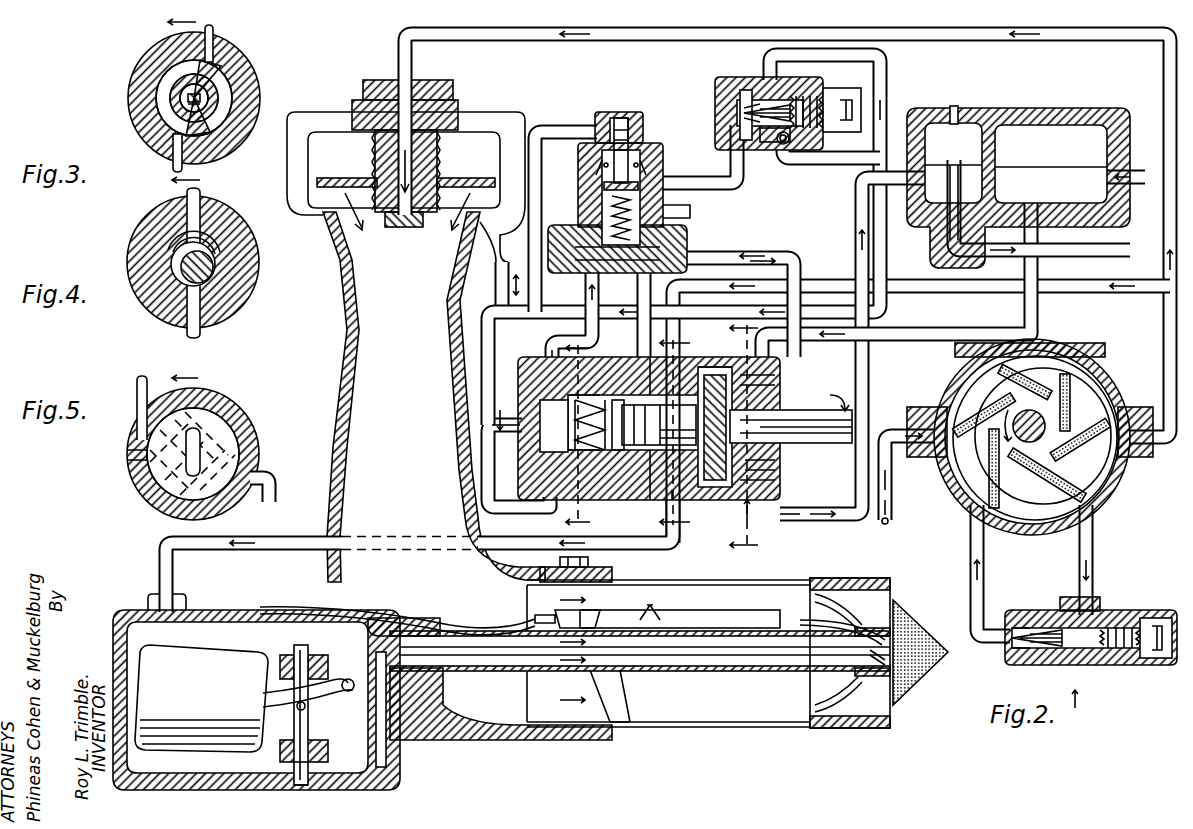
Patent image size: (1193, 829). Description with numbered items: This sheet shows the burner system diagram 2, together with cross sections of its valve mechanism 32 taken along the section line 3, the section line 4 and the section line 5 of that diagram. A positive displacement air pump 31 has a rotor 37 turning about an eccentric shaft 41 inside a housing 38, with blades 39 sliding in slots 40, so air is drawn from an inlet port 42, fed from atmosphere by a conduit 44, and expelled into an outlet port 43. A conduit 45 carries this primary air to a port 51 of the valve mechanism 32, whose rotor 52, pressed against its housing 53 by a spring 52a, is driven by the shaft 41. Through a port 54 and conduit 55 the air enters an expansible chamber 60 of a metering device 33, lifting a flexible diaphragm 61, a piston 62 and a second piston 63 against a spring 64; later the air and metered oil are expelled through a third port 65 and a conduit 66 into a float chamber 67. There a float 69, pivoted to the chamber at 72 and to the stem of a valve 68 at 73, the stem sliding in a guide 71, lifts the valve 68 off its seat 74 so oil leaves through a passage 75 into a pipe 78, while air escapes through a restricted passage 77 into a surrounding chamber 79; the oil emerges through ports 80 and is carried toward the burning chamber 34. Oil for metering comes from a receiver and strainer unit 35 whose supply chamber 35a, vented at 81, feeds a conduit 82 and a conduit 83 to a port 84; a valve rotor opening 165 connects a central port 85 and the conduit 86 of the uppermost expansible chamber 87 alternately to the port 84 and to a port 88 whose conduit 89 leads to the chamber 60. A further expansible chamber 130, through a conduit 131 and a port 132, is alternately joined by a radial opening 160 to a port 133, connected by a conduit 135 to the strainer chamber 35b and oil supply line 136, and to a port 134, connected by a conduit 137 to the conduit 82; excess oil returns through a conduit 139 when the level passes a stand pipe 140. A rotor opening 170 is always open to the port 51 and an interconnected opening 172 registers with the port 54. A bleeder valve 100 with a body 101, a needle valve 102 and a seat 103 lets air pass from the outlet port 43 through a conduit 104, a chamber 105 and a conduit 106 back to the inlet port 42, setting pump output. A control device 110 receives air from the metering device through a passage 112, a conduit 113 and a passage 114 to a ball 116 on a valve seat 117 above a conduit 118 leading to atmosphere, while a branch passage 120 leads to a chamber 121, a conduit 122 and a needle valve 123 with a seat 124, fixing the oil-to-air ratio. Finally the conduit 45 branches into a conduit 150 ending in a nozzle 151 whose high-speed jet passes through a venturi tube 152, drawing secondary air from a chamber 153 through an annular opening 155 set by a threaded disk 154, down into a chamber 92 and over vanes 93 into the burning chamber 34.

In FIG. 2, the Fig. 2 diagram 2 is at (741, 517).
In FIG. 2, the section line 3— 3 is at (737, 431).
In FIG. 2, the section line 4— 4 is at (684, 427).
In FIG. 2, the section line 5— 5 is at (587, 430).
In FIG. 2, the air pump 31 is at (1118, 525).
In FIG. 2, the valve mechanism 32 is at (731, 513).
In FIG. 2, the metering device 33 is at (568, 158).
In FIG. 2, the burning chamber 34 is at (938, 655).
In FIG. 2, the receiver and strainer unit 35 is at (1027, 116).
In FIG. 2, the receiver 35a is at (953, 157).
In FIG. 2, the oil strainer chamber 35b is at (1051, 154).
In FIG. 2, the rotor 37 is at (1085, 462).
In FIG. 2, the housing 38 is at (1018, 535).
In FIG. 2, the blades 39 is at (1060, 530).
In FIG. 2, the slots 40 is at (942, 506).
In FIG. 2, the shaft 41 is at (796, 415).
In FIG. 2, the inlet port 42 is at (945, 478).
In FIG. 2, the outlet port 43 is at (1100, 390).
In FIG. 2, the conduit 44 is at (1042, 418).
In FIG. 2, the conduit 45 is at (1077, 296).
In FIG. 4, the port 51 is at (178, 249).
In FIG. 2, the port 51 is at (697, 376).
In FIG. 2, the valve rotor 52 is at (620, 501).
In FIG. 2, the spring 52a is at (540, 456).
In FIG. 2, the valve housing 53 is at (655, 501).
In FIG. 2, the port 54 is at (613, 350).
In FIG. 2, the conduit 55 is at (639, 297).
In FIG. 2, the expansible chamber 60 is at (686, 268).
In FIG. 2, the flexible diaphragm 61 is at (702, 250).
In FIG. 2, the piston 62 is at (600, 240).
In FIG. 2, the second piston 63 is at (604, 190).
In FIG. 2, the spring 64 is at (604, 175).
In FIG. 4, the third port 65 is at (205, 316).
In FIG. 2, the third port 65 is at (680, 502).
In FIG. 2, the conduit 66 is at (679, 540).
In FIG. 2, the float chamber 67 is at (130, 611).
In FIG. 2, the valve 68 is at (294, 758).
In FIG. 2, the float 69 is at (214, 689).
In FIG. 2, the guide 71 is at (292, 660).
In FIG. 2, the pivotal connection 72 is at (348, 692).
In FIG. 2, the pivotal connection 73 is at (297, 709).
In FIG. 2, the valve seat 74 is at (306, 772).
In FIG. 2, the passage 75 is at (362, 775).
In FIG. 2, the passage 77 is at (370, 640).
In FIG. 2, the conduit 78 is at (628, 660).
In FIG. 2, the chamber 79 is at (598, 673).
In FIG. 2, the ports 80 is at (868, 634).
In FIG. 2, the vent 81 is at (957, 120).
In FIG. 2, the conduit 82 is at (862, 207).
In FIG. 5, the conduit 83 is at (272, 484).
In FIG. 2, the conduit 83 is at (806, 306).
In FIG. 5, the port 84 is at (255, 440).
In FIG. 2, the port 84 is at (560, 440).
In FIG. 5, the port 85 is at (127, 454).
In FIG. 2, the port 85 is at (522, 439).
In FIG. 2, the conduit 86 is at (498, 297).
In FIG. 2, the expansible chamber 87 is at (621, 128).
In FIG. 5, the port 88 is at (128, 488).
In FIG. 2, the port 88 is at (548, 385).
In FIG. 5, the conduit 89 is at (137, 389).
In FIG. 2, the conduit 89 is at (550, 339).
In FIG. 2, the chamber 92 is at (643, 590).
In FIG. 2, the vanes 93 is at (852, 610).
In FIG. 2, the bleeder valve 100 is at (1125, 711).
In FIG. 2, the valve body 101 is at (1156, 668).
In FIG. 2, the needle valve 102 is at (1075, 660).
In FIG. 2, the valve seat 103 is at (1036, 629).
In FIG. 2, the conduit 104 is at (1092, 570).
In FIG. 2, the chamber 105 is at (1025, 666).
In FIG. 2, the conduit 106 is at (970, 545).
In FIG. 2, the control device 110 is at (826, 84).
In FIG. 2, the passage 112 is at (676, 212).
In FIG. 2, the conduit 113 is at (737, 190).
In FIG. 2, the passage 114 is at (715, 133).
In FIG. 2, the ball 116 is at (792, 142).
In FIG. 2, the valve seat 117 is at (772, 148).
In FIG. 2, the conduit 118 is at (787, 168).
In FIG. 2, the passage 120 is at (742, 104).
In FIG. 2, the chamber 121 is at (762, 96).
In FIG. 2, the conduit 122 is at (888, 85).
In FIG. 2, the needle valve 123 is at (832, 126).
In FIG. 2, the valve seat 124 is at (742, 106).
In FIG. 2, the expansible chamber 130 is at (655, 180).
In FIG. 2, the conduit 131 is at (751, 246).
In FIG. 3, the port 132 is at (240, 78).
In FIG. 2, the port 132 is at (778, 396).
In FIG. 3, the port 133 is at (230, 94).
In FIG. 2, the port 133 is at (780, 381).
In FIG. 3, the port 134 is at (148, 86).
In FIG. 2, the port 134 is at (770, 481).
In FIG. 3, the conduit 135 is at (214, 29).
In FIG. 2, the conduit 135 is at (940, 334).
In FIG. 2, the oil supply line 136 is at (1134, 176).
In FIG. 3, the conduit 137 is at (173, 170).
In FIG. 2, the conduit 137 is at (826, 521).
In FIG. 2, the conduit 139 is at (1065, 256).
In FIG. 2, the stand pipe 140 is at (960, 178).
In FIG. 2, the conduit 150 is at (413, 63).
In FIG. 2, the nozzle 151 is at (408, 227).
In FIG. 2, the venturi tube 152 is at (346, 341).
In FIG. 2, the chamber 153 is at (335, 132).
In FIG. 2, the disk 154 is at (458, 178).
In FIG. 2, the annular opening 155 is at (292, 197).
In FIG. 3, the radially extending opening 160 is at (165, 44).
In FIG. 2, the radially extending opening 160 is at (659, 425).
In FIG. 5, the valve rotor opening 165 is at (208, 416).
In FIG. 2, the valve rotor opening 165 is at (582, 402).
In FIG. 2, the valve rotor opening 170 is at (640, 425).
In FIG. 2, the opening 172 is at (678, 439).